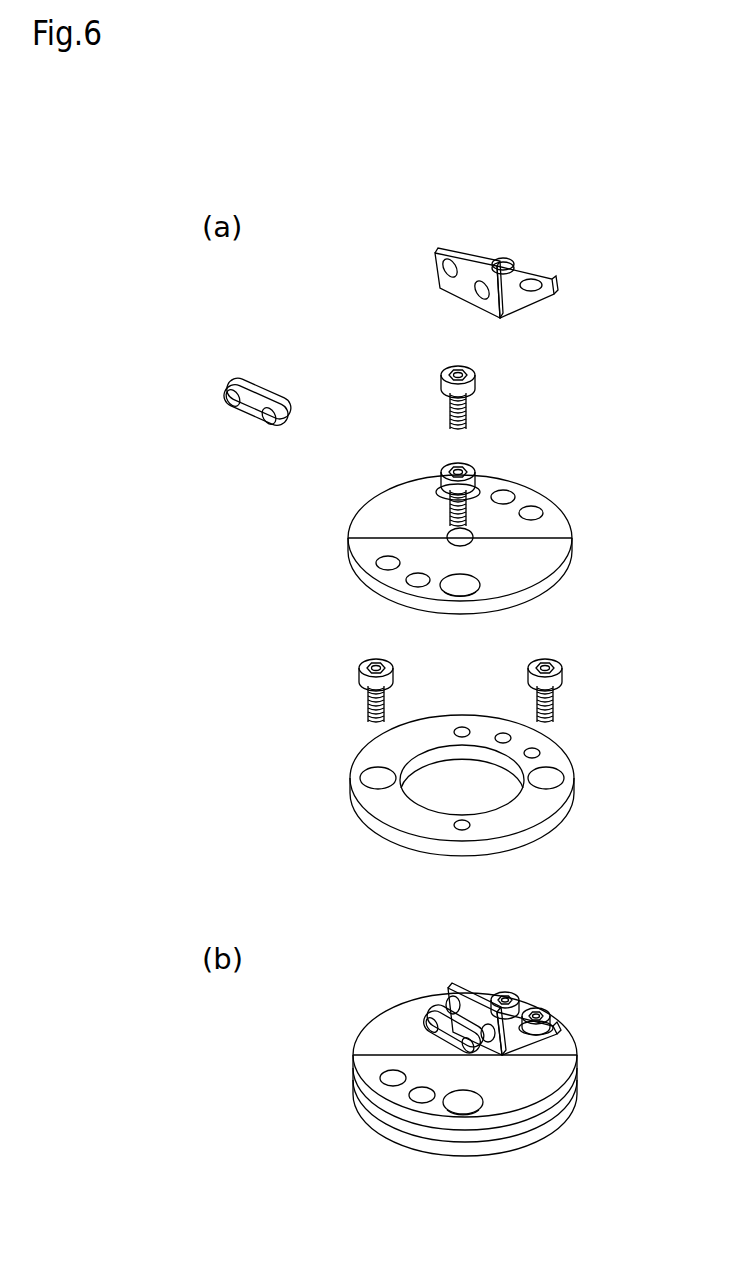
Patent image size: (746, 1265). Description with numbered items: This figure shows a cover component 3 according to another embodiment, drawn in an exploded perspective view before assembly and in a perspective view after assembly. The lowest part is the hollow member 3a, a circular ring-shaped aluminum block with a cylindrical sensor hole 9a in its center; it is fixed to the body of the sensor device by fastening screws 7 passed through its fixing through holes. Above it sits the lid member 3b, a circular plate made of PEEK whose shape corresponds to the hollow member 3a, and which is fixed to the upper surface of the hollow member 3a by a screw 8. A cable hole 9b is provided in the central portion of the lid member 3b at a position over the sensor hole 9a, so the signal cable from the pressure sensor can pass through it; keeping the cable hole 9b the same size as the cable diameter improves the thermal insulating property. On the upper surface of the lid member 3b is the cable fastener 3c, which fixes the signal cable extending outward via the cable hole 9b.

The cover component 3 is at (587, 1023).
The hollow member 3a is at (479, 785).
The lid member 3b is at (490, 532).
The cable fastener 3c is at (518, 273).
The screws 7 is at (557, 706).
The screw 8 is at (468, 412).
The sensor hole 9a is at (446, 777).
The cable hole 9b is at (440, 524).